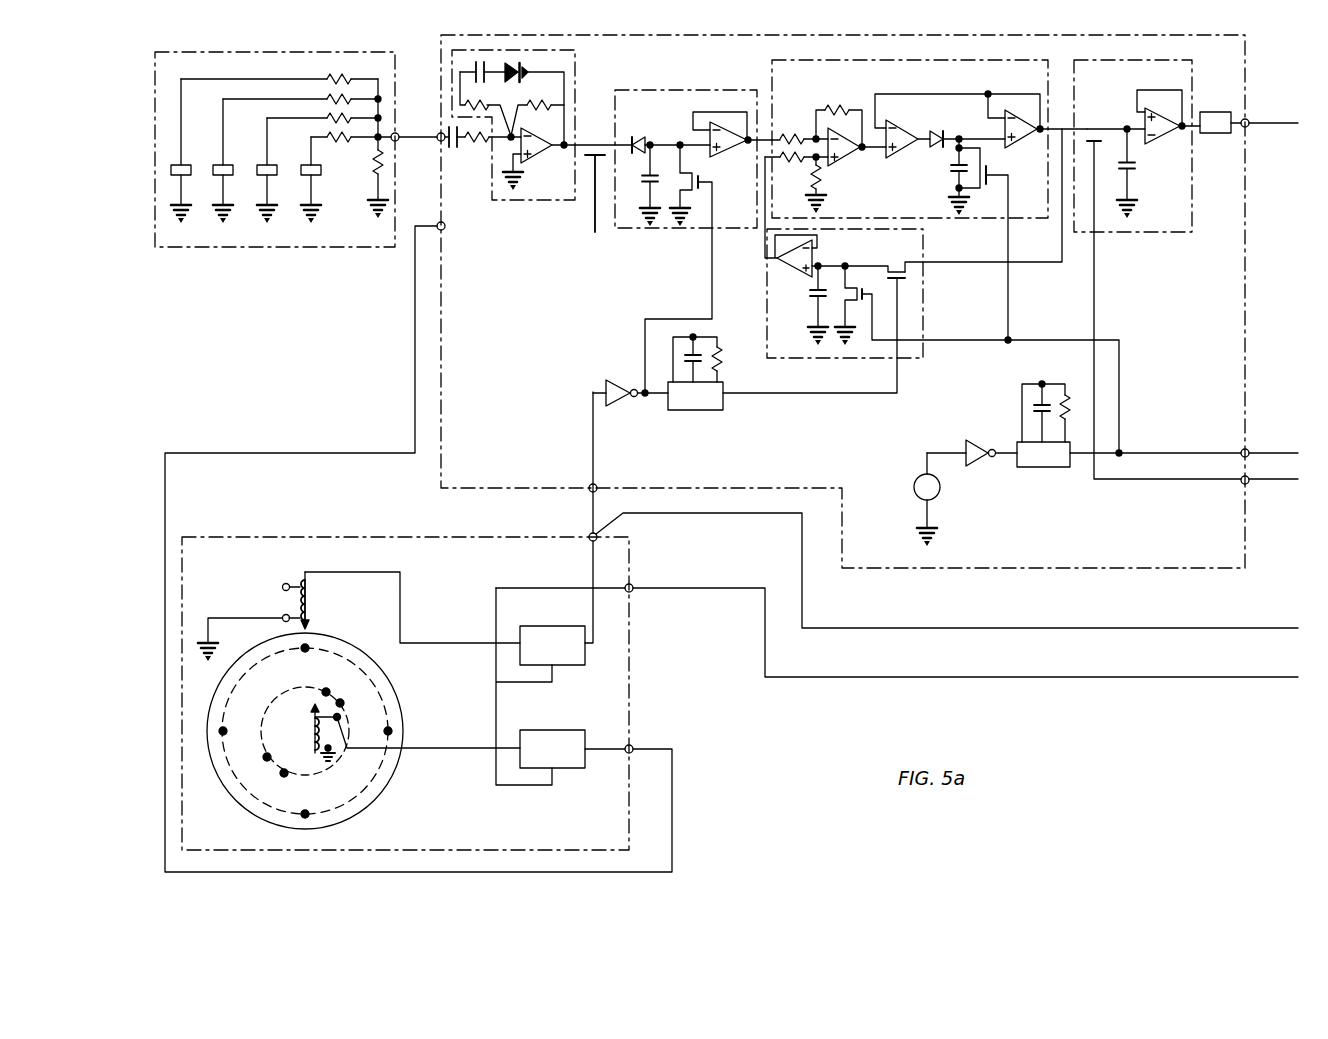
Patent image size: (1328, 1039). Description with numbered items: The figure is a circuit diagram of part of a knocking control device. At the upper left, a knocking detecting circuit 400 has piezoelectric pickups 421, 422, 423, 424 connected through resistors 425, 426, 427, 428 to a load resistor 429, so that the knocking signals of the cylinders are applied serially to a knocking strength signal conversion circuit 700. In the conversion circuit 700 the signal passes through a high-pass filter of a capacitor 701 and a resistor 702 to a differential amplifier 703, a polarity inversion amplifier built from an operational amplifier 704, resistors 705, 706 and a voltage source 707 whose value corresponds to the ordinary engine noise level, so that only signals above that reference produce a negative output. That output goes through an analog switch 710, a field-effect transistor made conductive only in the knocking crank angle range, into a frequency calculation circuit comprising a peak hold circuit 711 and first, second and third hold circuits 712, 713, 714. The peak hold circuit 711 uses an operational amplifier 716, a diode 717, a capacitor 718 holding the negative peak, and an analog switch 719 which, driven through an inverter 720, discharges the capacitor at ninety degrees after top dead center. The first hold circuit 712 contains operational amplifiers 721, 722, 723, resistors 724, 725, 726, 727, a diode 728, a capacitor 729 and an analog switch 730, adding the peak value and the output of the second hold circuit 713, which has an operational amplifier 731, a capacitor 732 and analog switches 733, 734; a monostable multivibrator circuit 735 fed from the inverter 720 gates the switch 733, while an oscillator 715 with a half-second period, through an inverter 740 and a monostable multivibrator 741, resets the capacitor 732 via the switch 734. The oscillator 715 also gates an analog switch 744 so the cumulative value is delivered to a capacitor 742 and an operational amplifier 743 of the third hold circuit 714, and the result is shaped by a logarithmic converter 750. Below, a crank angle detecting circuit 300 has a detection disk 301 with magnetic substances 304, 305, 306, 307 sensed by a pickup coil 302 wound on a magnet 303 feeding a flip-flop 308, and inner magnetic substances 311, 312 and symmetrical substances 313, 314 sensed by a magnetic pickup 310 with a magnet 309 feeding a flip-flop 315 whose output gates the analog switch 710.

The crank angle detecting circuit 300 is at (292, 537).
The detection disk 301 is at (210, 696).
The pickup coil 302 is at (316, 606).
The magnet 303 is at (318, 584).
The magnetic substance 304 is at (307, 650).
The magnetic substance 305 is at (223, 731).
The magnetic substance 306 is at (307, 814).
The magnetic substance 307 is at (390, 731).
The flip-flop 308 is at (590, 662).
The magnet 309 is at (315, 756).
The magnetic pickup 310 is at (312, 729).
The magnetic substance 311 is at (328, 692).
The magnetic substance 312 is at (342, 703).
The magnetic substance 313 is at (284, 773).
The magnetic substance 314 is at (267, 757).
The flip-flop 315 is at (572, 730).
The knocking detecting circuit 400 is at (228, 247).
The piezoelectric pickup 421 is at (170, 167).
The piezoelectric pickup 422 is at (222, 163).
The piezoelectric pickup 423 is at (266, 163).
The piezoelectric pickup 424 is at (310, 163).
The resistor 425 is at (335, 75).
The resistor 426 is at (352, 98).
The resistor 427 is at (378, 118).
The resistor 428 is at (344, 154).
The load resistor 429 is at (378, 183).
The knocking strength signal conversion circuit 700 is at (715, 36).
The capacitor 701 is at (455, 149).
The resistor 702 is at (478, 150).
The differential amplifier 703 is at (577, 72).
The operational amplifier 704 is at (535, 160).
The resistor 705 is at (537, 104).
The resistor 706 is at (468, 100).
The voltage source 707 is at (486, 60).
The analog switch 710 is at (593, 228).
The peak hold circuit 711 is at (686, 92).
The first hold circuit 712 is at (896, 60).
The second hold circuit 713 is at (922, 337).
The third hold circuit 714 is at (1140, 233).
The oscillator 715 is at (939, 492).
The operational amplifier 716 is at (730, 156).
The diode 717 is at (637, 135).
The capacitor 718 is at (645, 200).
The analog switch 719 is at (696, 200).
The inverter 720 is at (608, 385).
The operational amplifier 721 is at (858, 151).
The operational amplifier 722 is at (906, 159).
The operational amplifier 723 is at (1023, 148).
The resistor 724 is at (793, 128).
The resistor 725 is at (792, 161).
The resistor 726 is at (843, 105).
The resistor 727 is at (822, 186).
The diode 728 is at (936, 133).
The capacitor 729 is at (948, 190).
The analog switch 730 is at (1000, 178).
The operational amplifier 731 is at (822, 254).
The capacitor 732 is at (818, 301).
The analog switch 733 is at (906, 276).
The analog switch 734 is at (866, 295).
The monostable multivibrator circuit 735 is at (686, 411).
The inverter 740 is at (980, 440).
The monostable multivibrator 741 is at (1045, 467).
The capacitor 742 is at (1132, 172).
The operational amplifier 743 is at (1168, 141).
The analog switch 744 is at (1093, 138).
The logarithmic converter 750 is at (1218, 134).